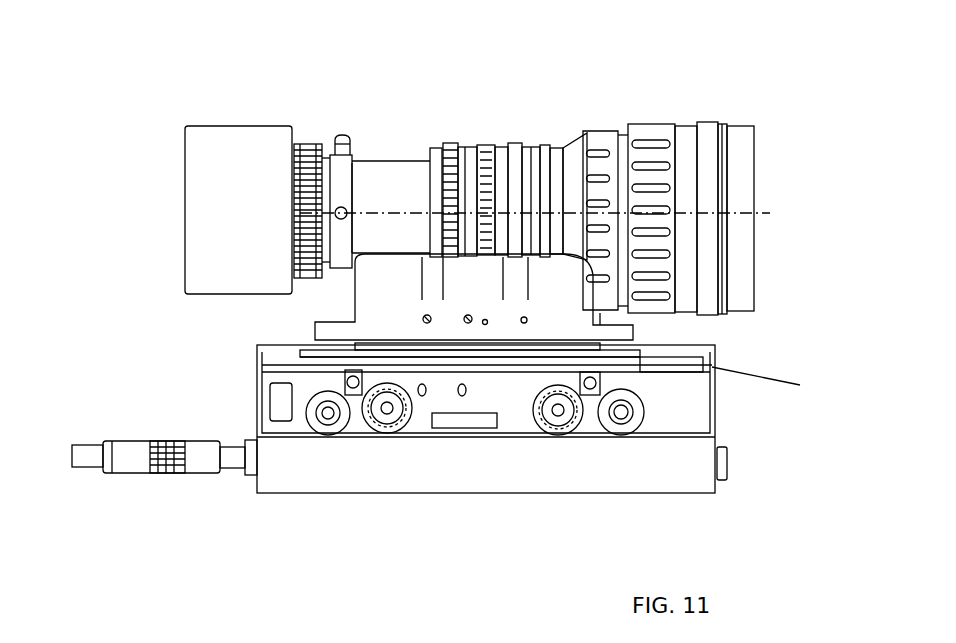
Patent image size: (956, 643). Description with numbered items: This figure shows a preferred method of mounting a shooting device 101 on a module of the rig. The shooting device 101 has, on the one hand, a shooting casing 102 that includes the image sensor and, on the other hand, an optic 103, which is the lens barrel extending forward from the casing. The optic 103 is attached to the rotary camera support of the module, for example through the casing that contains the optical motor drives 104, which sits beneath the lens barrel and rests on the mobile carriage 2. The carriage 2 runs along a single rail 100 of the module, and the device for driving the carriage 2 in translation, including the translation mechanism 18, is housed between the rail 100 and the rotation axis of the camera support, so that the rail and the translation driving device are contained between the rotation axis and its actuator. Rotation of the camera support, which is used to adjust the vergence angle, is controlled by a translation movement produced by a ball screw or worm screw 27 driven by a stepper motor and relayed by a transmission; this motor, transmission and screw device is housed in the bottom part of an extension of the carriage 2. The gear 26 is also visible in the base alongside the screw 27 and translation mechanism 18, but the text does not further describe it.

The carriage 2 is at (248, 400).
The translation mechanism 18 is at (638, 425).
The drive gear 26 is at (387, 425).
The ball screw or worm screw 27 is at (345, 418).
The single rail 100 is at (445, 423).
The shooting device 101 is at (552, 108).
The shooting casing 102 is at (202, 157).
The optic 103 is at (740, 148).
The optical motor drives 104 is at (368, 295).